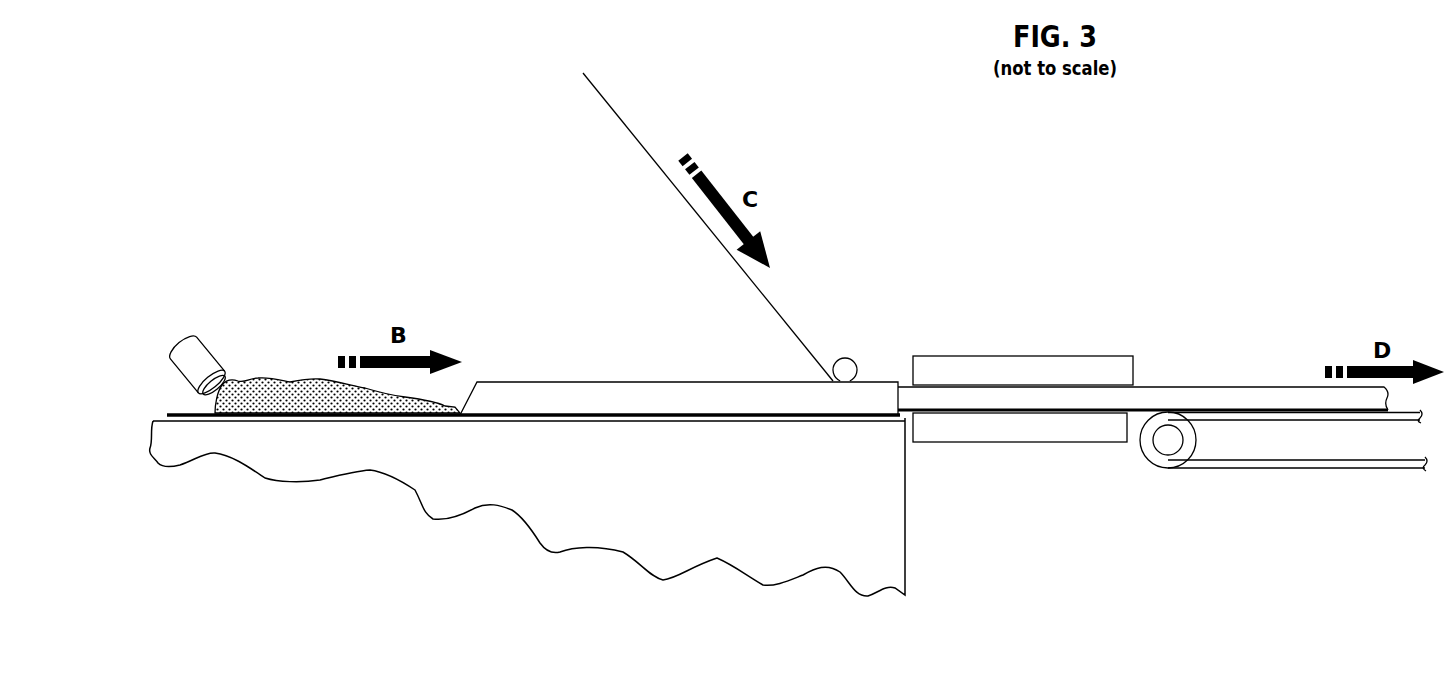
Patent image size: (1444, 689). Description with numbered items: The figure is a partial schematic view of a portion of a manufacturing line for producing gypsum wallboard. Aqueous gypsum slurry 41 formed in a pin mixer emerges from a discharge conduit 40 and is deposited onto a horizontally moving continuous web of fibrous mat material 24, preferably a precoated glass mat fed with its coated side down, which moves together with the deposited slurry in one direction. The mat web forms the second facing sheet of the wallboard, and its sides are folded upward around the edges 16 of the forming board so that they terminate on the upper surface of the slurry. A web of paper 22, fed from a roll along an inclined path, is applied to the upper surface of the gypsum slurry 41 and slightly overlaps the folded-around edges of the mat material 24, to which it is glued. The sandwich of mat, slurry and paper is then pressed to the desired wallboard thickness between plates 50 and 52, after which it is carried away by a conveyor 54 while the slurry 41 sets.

The edges 16 is at (1243, 398).
The paper 22 is at (638, 133).
The mat material 24 is at (170, 412).
The discharge conduit 40 is at (203, 335).
The aqueous gypsum slurry 41 is at (318, 371).
The plate 50 is at (1040, 358).
The plate 52 is at (1015, 438).
The conveyor 54 is at (1305, 472).